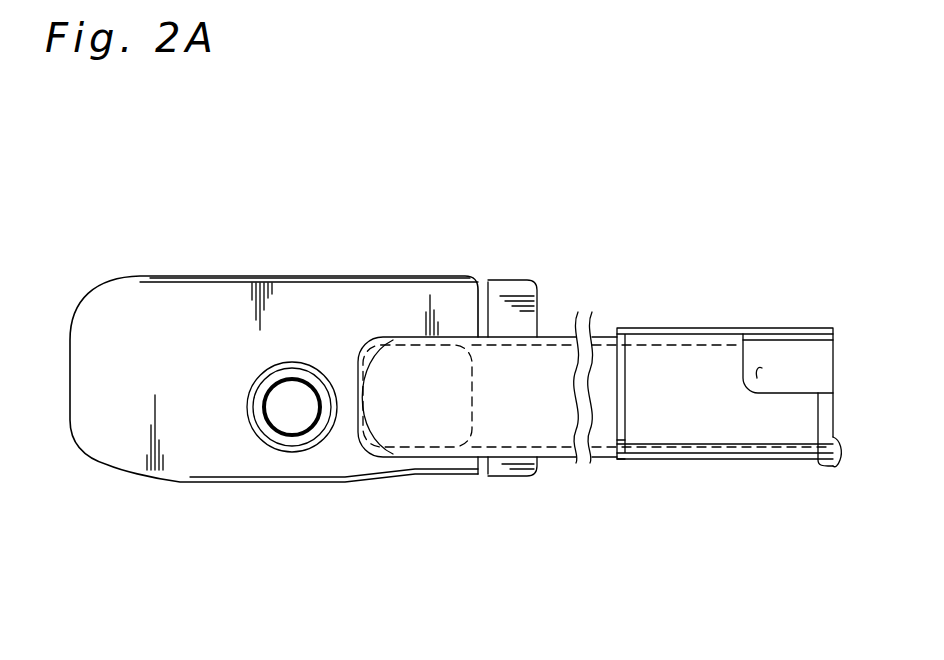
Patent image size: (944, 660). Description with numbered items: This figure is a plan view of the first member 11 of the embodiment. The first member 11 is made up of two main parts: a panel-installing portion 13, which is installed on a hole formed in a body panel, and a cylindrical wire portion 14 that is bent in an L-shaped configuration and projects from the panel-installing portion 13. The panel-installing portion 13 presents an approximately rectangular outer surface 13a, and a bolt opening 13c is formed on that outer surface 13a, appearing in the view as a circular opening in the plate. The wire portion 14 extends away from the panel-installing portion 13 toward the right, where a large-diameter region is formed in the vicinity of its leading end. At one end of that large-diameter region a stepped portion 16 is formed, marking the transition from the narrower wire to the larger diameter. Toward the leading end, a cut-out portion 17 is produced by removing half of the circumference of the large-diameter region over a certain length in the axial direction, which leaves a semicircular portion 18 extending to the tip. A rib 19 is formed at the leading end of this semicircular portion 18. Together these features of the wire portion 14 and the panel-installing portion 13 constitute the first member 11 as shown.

The first member 11 is at (513, 233).
The panel-installing portion 13 is at (284, 276).
The outer surface 13a is at (229, 310).
The bolt opening 13c is at (293, 428).
The wire portion 14 is at (667, 328).
The stepped portion 16 is at (627, 432).
The cut-out portion 17 is at (762, 368).
The semicircular portion 18 is at (797, 440).
The rib 19 is at (833, 433).